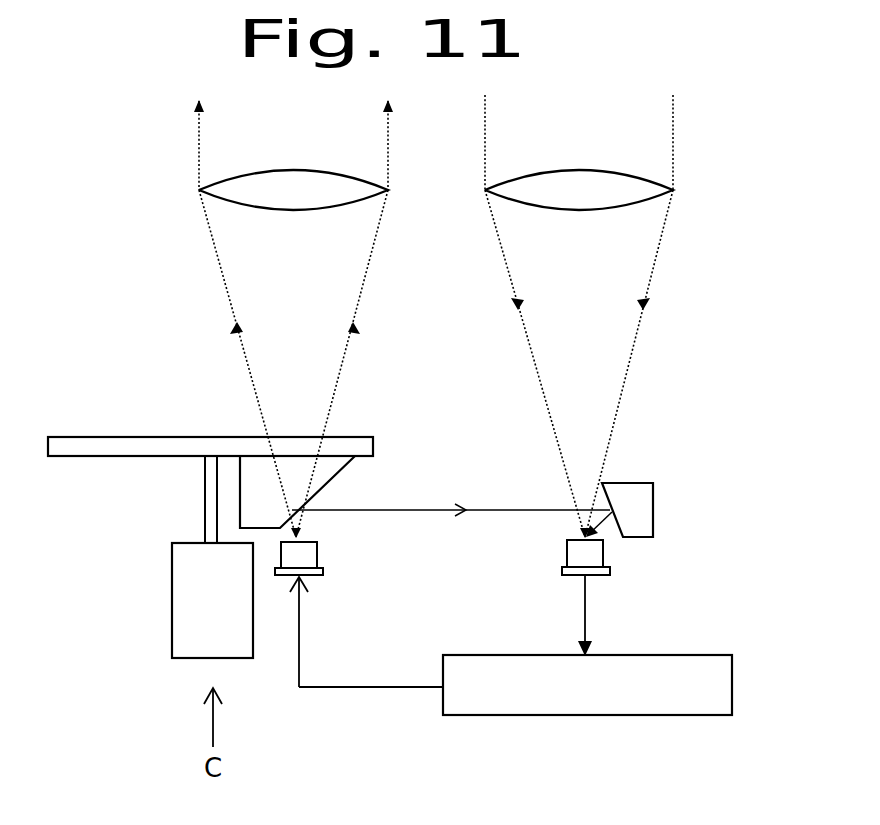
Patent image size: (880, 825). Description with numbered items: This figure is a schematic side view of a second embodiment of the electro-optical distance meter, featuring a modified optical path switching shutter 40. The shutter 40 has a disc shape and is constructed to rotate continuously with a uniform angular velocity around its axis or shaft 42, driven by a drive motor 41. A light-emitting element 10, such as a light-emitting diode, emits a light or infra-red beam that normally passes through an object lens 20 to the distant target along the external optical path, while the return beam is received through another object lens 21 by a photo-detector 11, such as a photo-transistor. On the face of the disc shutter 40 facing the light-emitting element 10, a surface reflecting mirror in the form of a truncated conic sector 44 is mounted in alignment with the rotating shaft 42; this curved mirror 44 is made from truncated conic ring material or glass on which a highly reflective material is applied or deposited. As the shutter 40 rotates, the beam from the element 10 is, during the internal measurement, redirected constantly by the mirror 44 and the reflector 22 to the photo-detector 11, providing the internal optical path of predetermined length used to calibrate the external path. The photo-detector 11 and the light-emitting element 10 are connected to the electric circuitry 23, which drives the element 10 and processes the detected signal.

The light-emitting element 10 is at (317, 552).
The photo-detector 11 is at (563, 552).
The object lens 20 is at (228, 177).
The object lens 21 is at (650, 178).
The reflector 22 is at (653, 498).
The electric circuitry 23 is at (701, 655).
The optical path switching shutter 40 is at (66, 431).
The drive motor 41 is at (172, 603).
The shaft 42 is at (205, 497).
The truncated conic sector mirror 44 is at (260, 470).